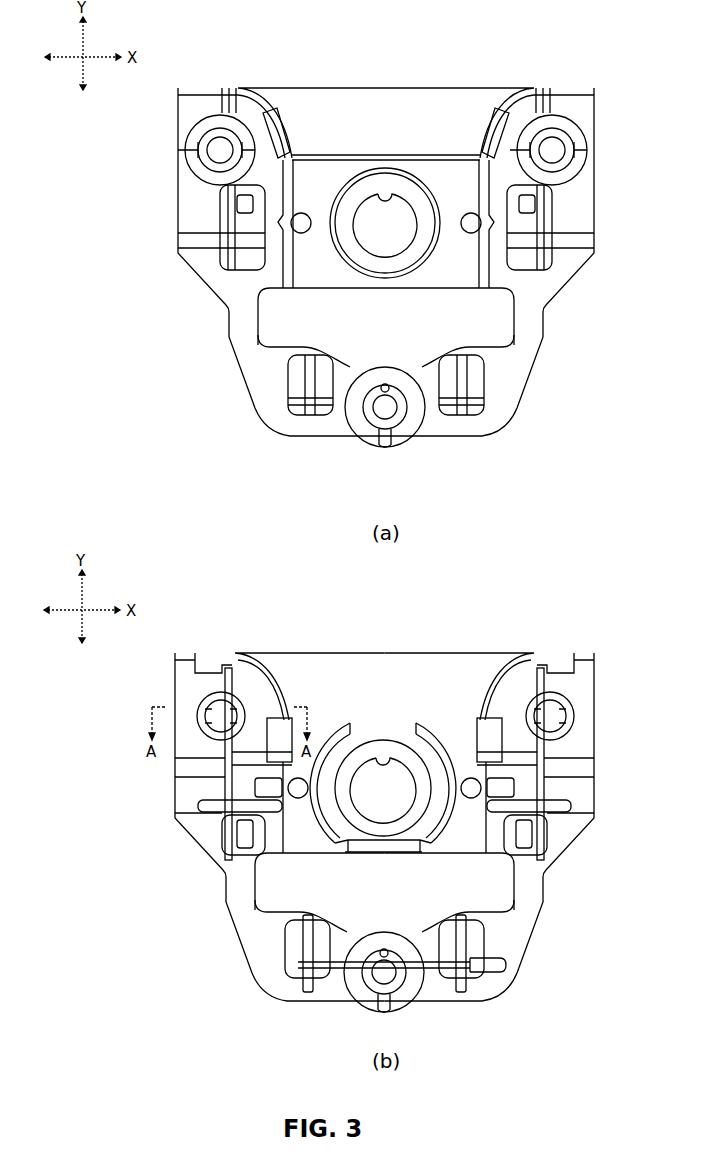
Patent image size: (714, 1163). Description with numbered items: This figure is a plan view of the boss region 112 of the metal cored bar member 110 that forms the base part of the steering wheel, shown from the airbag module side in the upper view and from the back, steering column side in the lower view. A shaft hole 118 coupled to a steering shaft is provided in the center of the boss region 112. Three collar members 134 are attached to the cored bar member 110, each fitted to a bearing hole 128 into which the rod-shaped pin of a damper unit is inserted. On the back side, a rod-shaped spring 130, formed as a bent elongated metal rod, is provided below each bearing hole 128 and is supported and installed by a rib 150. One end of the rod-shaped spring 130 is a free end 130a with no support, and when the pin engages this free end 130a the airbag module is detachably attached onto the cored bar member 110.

The cored bar member 110 is at (270, 58).
The boss region 112 is at (325, 165).
The shaft hole 118 is at (375, 196).
The bearing hole 128 is at (200, 735).
The rod-shaped spring 130 is at (215, 684).
The free end 130a is at (236, 676).
The collar member 134 is at (203, 128).
The rib 150 is at (205, 800).